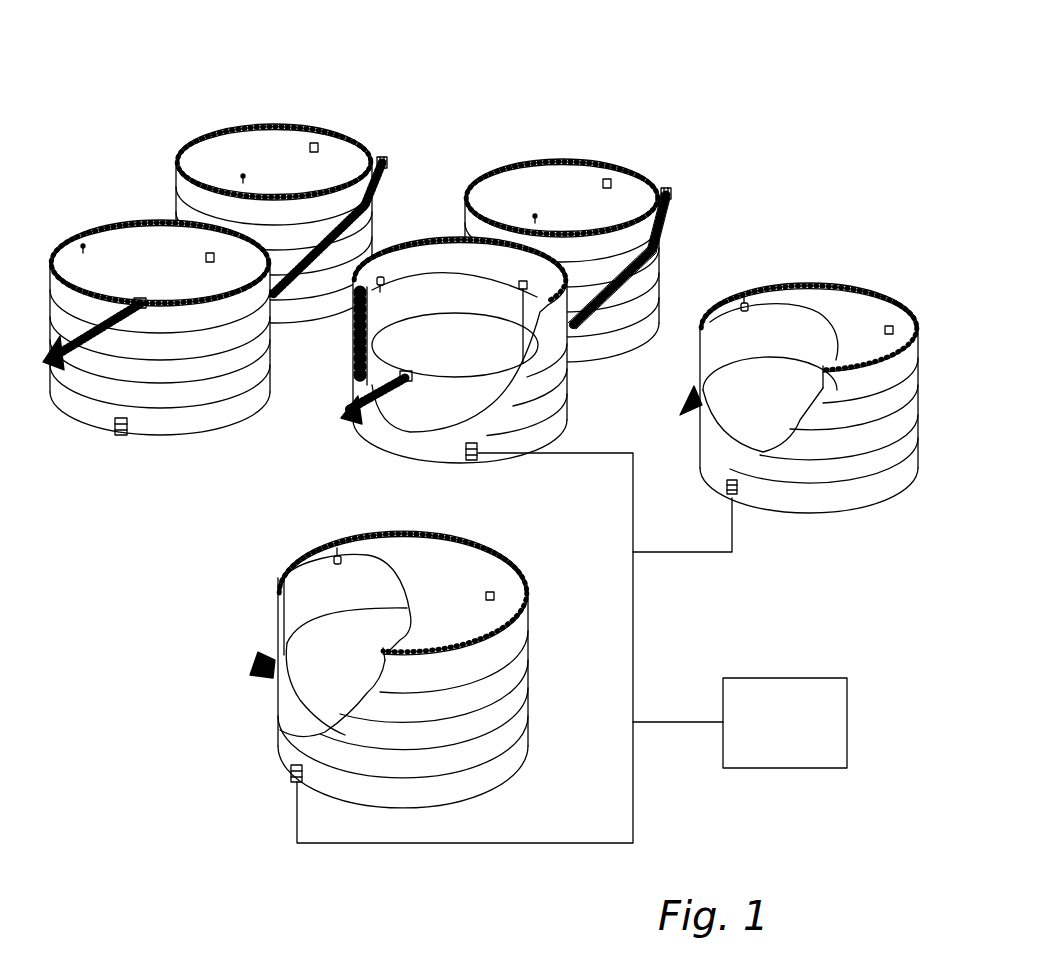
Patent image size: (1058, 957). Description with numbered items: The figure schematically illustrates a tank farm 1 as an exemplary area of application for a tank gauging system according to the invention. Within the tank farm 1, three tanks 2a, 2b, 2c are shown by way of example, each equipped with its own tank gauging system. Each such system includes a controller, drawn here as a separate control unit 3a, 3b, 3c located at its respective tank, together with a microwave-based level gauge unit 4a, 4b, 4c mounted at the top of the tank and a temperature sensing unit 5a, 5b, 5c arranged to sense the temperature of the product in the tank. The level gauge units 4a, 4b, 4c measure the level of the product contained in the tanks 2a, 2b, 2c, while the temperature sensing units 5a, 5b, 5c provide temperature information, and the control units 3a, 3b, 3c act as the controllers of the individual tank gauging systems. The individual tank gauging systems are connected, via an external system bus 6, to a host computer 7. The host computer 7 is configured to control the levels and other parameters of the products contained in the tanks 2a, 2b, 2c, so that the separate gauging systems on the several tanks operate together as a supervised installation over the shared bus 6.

The tank farm 1 is at (735, 130).
The tank 2a is at (567, 383).
The tank 2b is at (850, 474).
The tank 2c is at (270, 694).
The control unit 3a is at (471, 461).
The control unit 3b is at (736, 492).
The control unit 3c is at (292, 778).
The microwave-based level gauge unit 4a is at (381, 277).
The microwave-based level gauge unit 4b is at (746, 300).
The microwave-based level gauge unit 4c is at (335, 553).
The temperature sensing unit 5a is at (523, 281).
The temperature sensing unit 5b is at (887, 326).
The temperature sensing unit 5c is at (495, 593).
The external system bus 6 is at (633, 610).
The host computer 7 is at (787, 770).